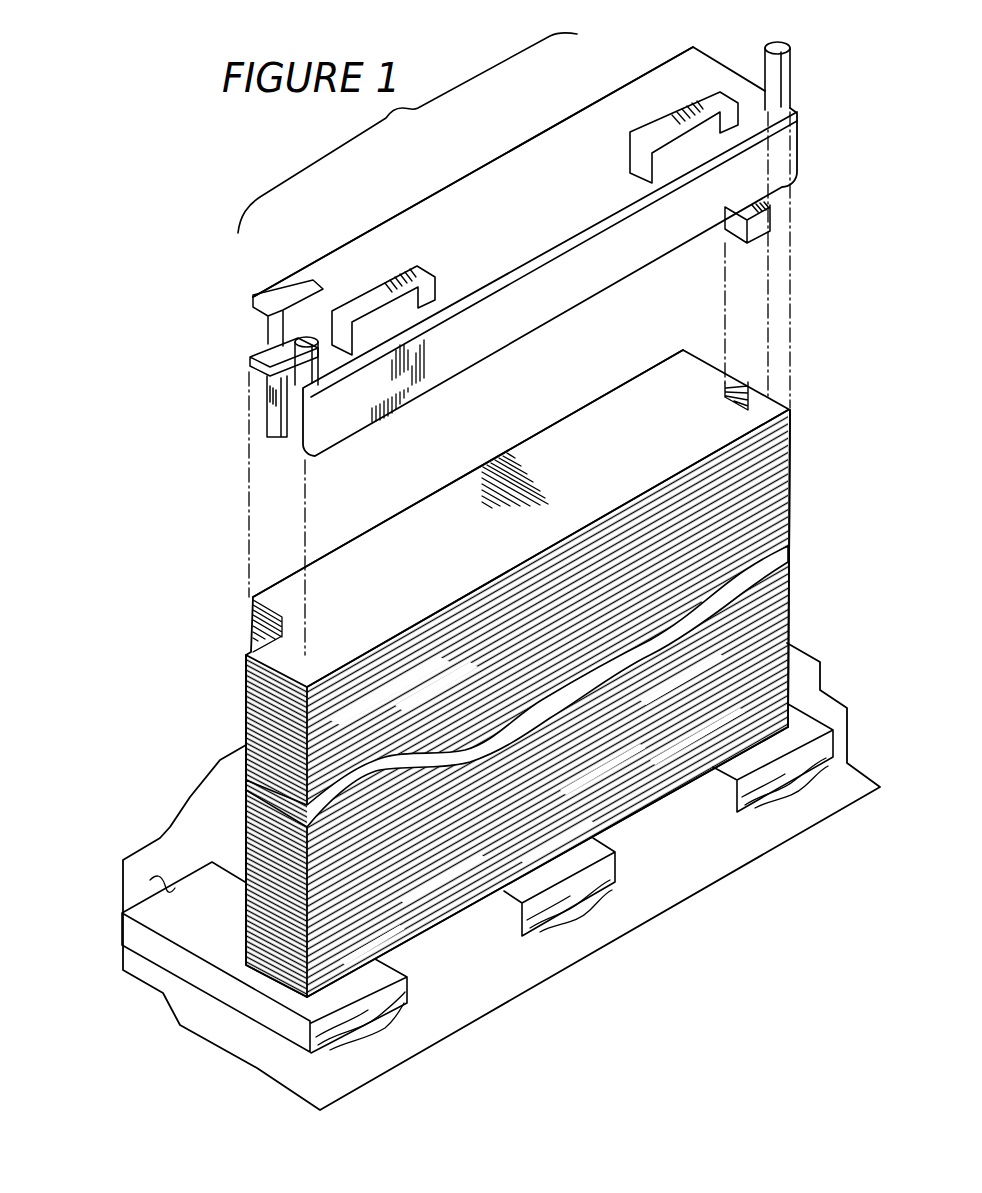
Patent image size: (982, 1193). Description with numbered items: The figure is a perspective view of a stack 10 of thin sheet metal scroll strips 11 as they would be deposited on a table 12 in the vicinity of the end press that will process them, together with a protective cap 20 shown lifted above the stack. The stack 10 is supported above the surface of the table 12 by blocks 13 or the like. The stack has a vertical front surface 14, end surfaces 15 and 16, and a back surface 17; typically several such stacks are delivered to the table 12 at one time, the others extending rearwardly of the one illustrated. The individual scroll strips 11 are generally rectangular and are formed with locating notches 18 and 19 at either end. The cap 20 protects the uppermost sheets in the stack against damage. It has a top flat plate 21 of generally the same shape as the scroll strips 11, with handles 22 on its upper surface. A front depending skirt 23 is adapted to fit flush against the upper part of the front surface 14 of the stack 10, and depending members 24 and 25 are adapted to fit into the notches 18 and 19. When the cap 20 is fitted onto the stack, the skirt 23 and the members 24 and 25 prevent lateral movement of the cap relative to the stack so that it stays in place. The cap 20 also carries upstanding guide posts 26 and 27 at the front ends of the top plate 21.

The stack 10 is at (460, 462).
The scroll strips 11 is at (367, 548).
The table 12 is at (494, 990).
The blocks 13 is at (728, 790).
The front surface 14 is at (719, 699).
The end surface 15 is at (262, 716).
The end surface 16 is at (790, 520).
The back surface 17 is at (494, 458).
The locating notch 18 is at (270, 628).
The locating notch 19 is at (752, 395).
The cap 20 is at (538, 130).
The top flat plate 21 is at (527, 209).
The handles 22 is at (667, 130).
The front depending skirt 23 is at (528, 310).
The depending member 24 is at (268, 407).
The depending member 25 is at (760, 213).
The upstanding guide post 26 is at (783, 70).
The upstanding guide post 27 is at (298, 364).